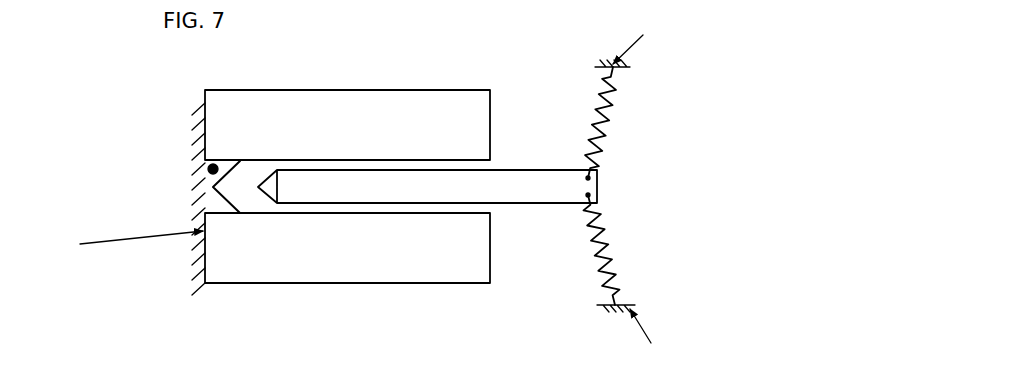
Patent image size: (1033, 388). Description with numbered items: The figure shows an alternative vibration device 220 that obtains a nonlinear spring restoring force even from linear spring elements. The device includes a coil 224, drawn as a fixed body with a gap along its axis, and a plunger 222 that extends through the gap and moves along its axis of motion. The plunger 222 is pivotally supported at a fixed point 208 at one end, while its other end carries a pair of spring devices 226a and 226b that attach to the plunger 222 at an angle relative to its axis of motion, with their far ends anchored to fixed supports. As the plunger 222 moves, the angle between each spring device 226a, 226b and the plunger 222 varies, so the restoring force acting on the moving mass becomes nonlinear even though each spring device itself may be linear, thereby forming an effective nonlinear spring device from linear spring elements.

The vibration device 220 is at (555, 22).
The coil 224 is at (417, 90).
The pivot / hinge point 208 is at (208, 166).
The plunger 222 is at (513, 168).
The spring device 226a is at (613, 115).
The spring device 226b is at (615, 257).